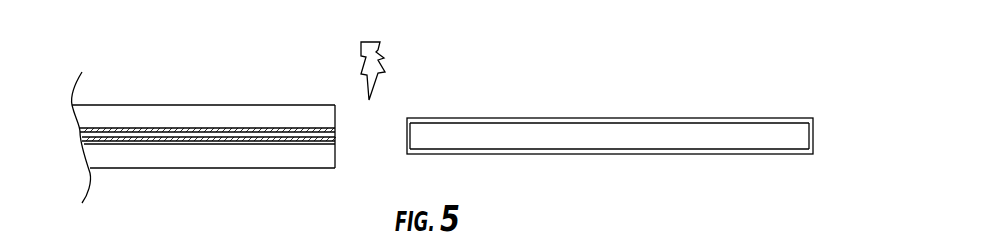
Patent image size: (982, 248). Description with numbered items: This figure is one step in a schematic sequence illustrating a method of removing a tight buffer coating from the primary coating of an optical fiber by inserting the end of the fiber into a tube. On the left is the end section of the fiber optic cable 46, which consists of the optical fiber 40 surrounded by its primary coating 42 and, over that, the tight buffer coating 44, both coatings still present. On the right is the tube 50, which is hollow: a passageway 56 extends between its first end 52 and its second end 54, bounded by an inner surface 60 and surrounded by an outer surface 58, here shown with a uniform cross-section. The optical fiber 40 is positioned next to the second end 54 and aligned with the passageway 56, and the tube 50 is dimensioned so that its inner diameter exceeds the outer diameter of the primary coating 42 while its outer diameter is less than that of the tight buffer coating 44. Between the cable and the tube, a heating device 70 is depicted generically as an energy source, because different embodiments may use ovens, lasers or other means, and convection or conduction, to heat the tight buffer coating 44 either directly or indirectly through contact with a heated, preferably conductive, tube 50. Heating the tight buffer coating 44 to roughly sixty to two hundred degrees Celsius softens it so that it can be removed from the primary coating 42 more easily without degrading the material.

The optical fiber 40 is at (80, 138).
The primary coating 42 is at (80, 130).
The tight buffer coating 44 is at (123, 105).
The fiber optic cable 46 is at (218, 106).
The tube 50 is at (571, 118).
The first end 52 is at (813, 118).
The second end 54 is at (407, 118).
The passageway 56 is at (505, 143).
The outer surface 58 is at (672, 118).
The inner surface 60 is at (687, 148).
The heating device 70 is at (380, 47).